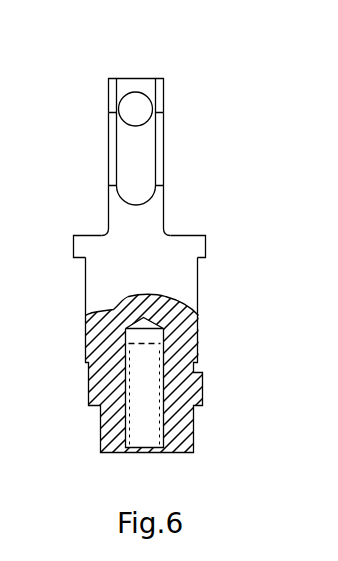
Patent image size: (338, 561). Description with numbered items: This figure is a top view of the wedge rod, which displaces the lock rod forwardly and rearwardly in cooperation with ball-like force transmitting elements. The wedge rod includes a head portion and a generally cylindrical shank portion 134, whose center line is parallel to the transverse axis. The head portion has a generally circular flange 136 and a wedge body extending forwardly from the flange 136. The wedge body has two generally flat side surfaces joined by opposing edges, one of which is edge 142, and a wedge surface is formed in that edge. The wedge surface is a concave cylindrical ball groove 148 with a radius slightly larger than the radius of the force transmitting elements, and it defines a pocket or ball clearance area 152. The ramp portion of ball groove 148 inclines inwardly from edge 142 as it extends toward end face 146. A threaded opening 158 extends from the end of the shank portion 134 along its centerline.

The shank portion 134 is at (197, 333).
The circular flange 136 is at (193, 245).
The edge 142 is at (143, 218).
The end face 146 is at (132, 78).
The ball groove 148 is at (148, 122).
The ball clearance area 152 is at (135, 110).
The threaded opening 158 is at (147, 430).